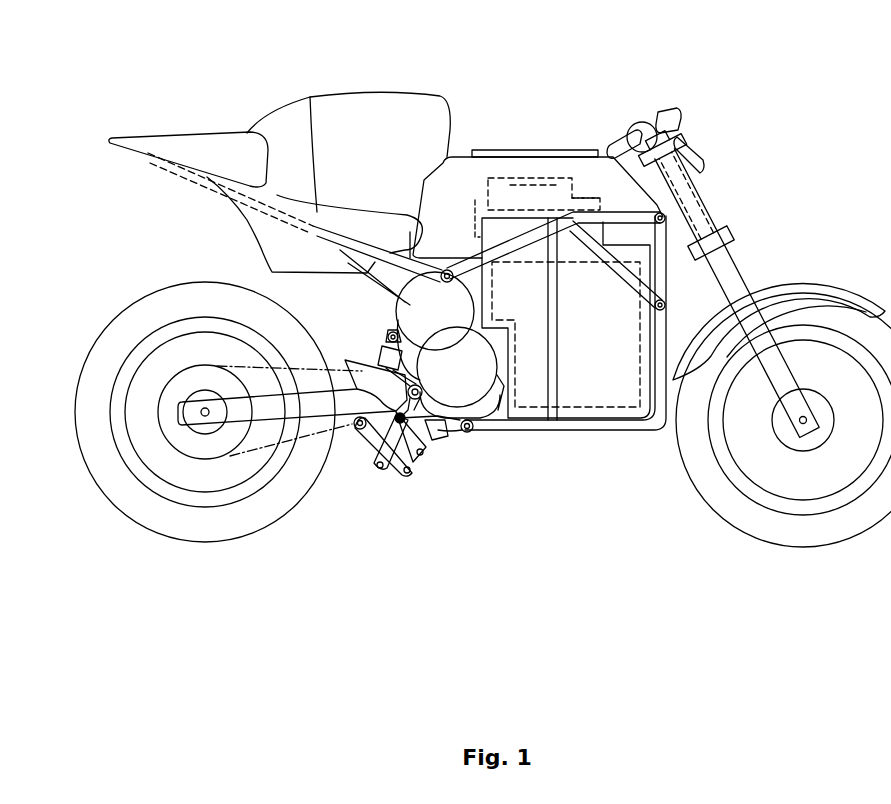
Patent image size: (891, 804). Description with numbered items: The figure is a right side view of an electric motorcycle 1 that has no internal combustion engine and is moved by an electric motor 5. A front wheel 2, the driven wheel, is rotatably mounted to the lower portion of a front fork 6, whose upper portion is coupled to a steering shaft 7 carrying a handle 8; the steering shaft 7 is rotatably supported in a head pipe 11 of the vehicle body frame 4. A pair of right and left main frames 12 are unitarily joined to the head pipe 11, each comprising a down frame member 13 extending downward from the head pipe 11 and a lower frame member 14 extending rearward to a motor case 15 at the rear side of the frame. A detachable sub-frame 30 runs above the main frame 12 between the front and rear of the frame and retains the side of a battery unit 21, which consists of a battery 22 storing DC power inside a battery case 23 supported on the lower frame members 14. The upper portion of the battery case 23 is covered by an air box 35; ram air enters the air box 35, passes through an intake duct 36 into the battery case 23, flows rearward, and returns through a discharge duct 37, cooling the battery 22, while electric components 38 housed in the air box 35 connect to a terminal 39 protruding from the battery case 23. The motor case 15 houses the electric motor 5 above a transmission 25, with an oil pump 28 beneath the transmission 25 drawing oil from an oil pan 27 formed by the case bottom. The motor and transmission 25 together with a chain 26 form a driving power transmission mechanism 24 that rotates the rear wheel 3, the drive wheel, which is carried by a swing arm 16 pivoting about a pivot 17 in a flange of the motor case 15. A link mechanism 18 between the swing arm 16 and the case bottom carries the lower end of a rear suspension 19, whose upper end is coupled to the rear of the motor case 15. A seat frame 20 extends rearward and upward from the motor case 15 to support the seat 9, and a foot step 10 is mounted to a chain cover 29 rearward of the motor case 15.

The electric motorcycle 1 is at (801, 112).
The front wheel 2 is at (758, 524).
The rear wheel 3 is at (250, 528).
The vehicle body frame 4 is at (678, 286).
The electric motor 5 is at (410, 316).
The front fork 6 is at (745, 270).
The steering shaft 7 is at (710, 205).
The handle 8 is at (662, 127).
The seat 9 is at (300, 127).
The foot step 10 is at (403, 486).
The head pipe 11 is at (700, 187).
The main frame 12 is at (657, 424).
The down frame member 13 is at (657, 362).
The lower frame member 14 is at (560, 423).
The motor case 15 is at (498, 402).
The swing arm 16 is at (268, 412).
The pivot 17 is at (372, 357).
The link mechanism 18 is at (386, 477).
The rear suspension 19 is at (358, 438).
The seat frame 20 is at (217, 193).
The battery unit 21 is at (527, 417).
The battery 22 is at (588, 408).
The battery case 23 is at (507, 227).
The driving power transmission mechanism 24 is at (311, 441).
The transmission 25 is at (468, 388).
The chain 26 is at (247, 455).
The oil pan 27 is at (440, 433).
The oil pump 28 is at (440, 452).
The chain cover 29 is at (348, 360).
The sub-frame 30 is at (478, 240).
The air box 35 is at (443, 163).
The intake duct 36 is at (600, 198).
The discharge duct 37 is at (472, 240).
The electric components 38 is at (560, 227).
The terminal 39 is at (521, 230).